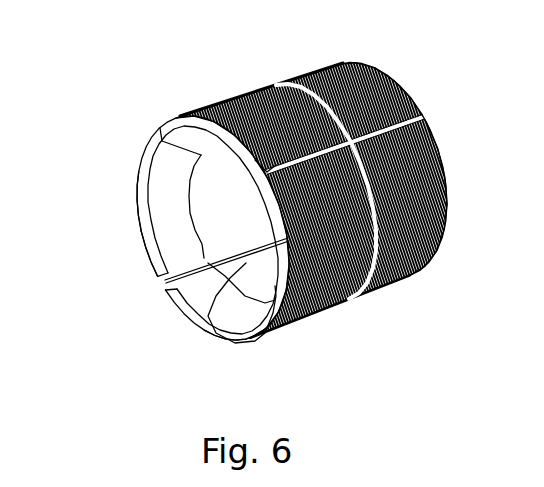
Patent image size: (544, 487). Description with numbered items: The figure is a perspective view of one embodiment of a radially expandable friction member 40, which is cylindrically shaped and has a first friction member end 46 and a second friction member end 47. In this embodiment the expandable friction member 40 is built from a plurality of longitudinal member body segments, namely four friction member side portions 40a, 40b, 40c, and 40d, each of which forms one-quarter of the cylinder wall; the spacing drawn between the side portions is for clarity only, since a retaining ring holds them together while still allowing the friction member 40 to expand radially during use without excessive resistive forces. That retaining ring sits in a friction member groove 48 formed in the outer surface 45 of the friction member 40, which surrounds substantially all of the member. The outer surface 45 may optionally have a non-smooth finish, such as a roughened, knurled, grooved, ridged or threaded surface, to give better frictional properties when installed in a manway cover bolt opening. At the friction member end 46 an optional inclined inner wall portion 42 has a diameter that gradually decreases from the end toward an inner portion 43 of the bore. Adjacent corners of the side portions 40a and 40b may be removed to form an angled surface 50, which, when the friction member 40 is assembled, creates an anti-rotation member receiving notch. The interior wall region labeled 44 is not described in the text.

The expandable friction member 40 is at (177, 88).
The friction member side portion 40a is at (372, 62).
The friction member side portion 40b is at (443, 200).
The friction member side portion 40c is at (247, 333).
The friction member side portion 40d is at (134, 172).
The inclined inner wall portion 42 is at (147, 254).
The inner portion 43 is at (183, 265).
The inner wall 44 is at (160, 225).
The outer surface 45 is at (413, 277).
The first friction member end 46 is at (140, 230).
The second friction member end 47 is at (440, 173).
The friction member groove 48 is at (356, 175).
The angled surface 50 is at (268, 173).